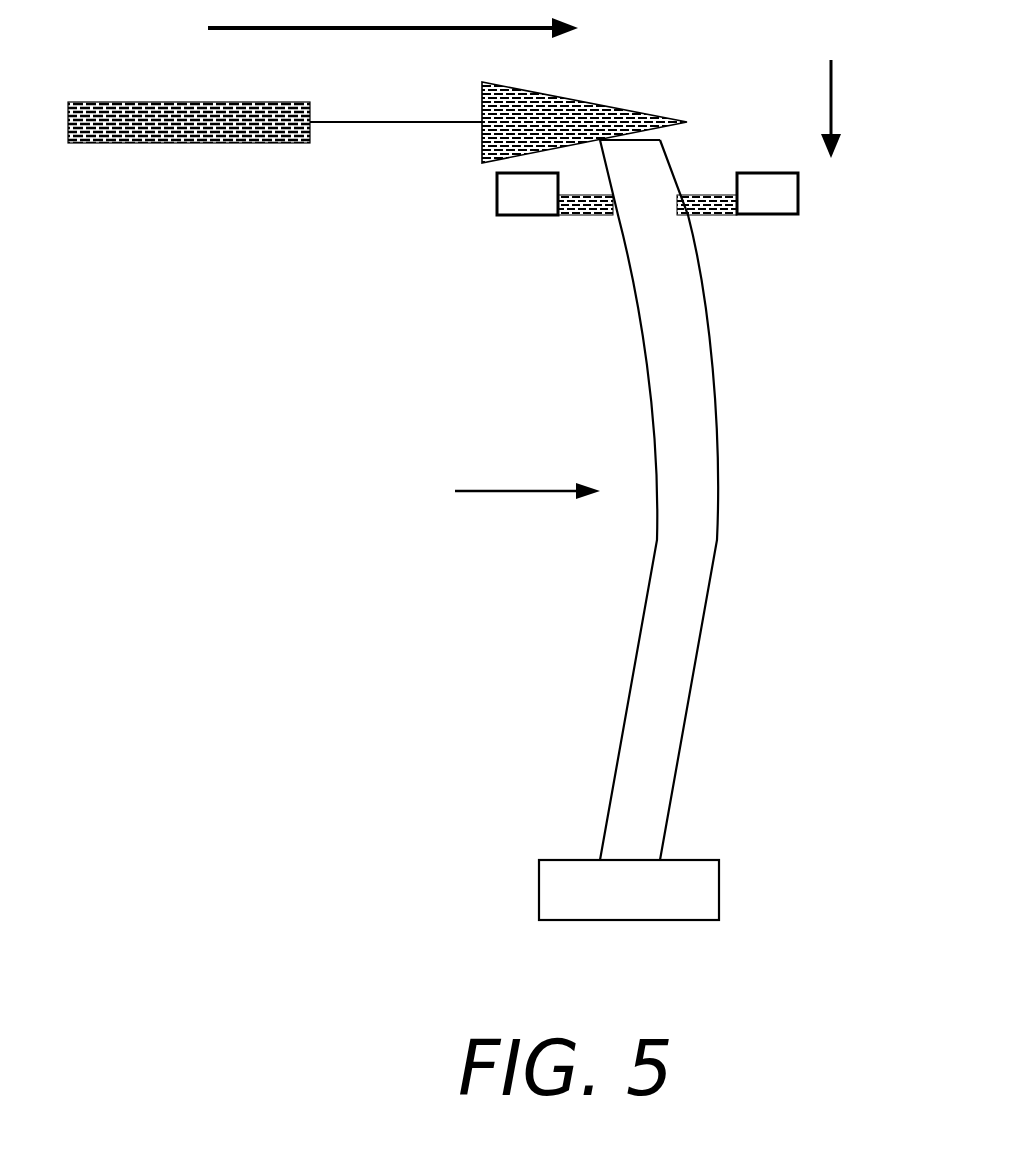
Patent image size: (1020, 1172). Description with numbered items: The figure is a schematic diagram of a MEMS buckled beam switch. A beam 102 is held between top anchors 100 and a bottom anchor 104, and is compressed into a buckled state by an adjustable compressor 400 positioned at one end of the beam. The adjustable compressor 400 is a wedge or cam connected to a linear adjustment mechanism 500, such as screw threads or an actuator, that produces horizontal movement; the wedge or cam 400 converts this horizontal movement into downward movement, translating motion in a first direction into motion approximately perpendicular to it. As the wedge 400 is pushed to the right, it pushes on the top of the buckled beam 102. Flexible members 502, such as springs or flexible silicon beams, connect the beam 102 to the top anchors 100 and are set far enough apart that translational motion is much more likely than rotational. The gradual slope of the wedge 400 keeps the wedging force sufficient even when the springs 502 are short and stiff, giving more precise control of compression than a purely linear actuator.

The top anchor 100 is at (495, 214).
The beam 102 is at (720, 480).
The bottom anchor 104 is at (538, 893).
The adjustable compressor (wedge or cam) 400 is at (482, 83).
The linear adjustment mechanism 500 is at (150, 143).
The flexible members 502 is at (582, 212).